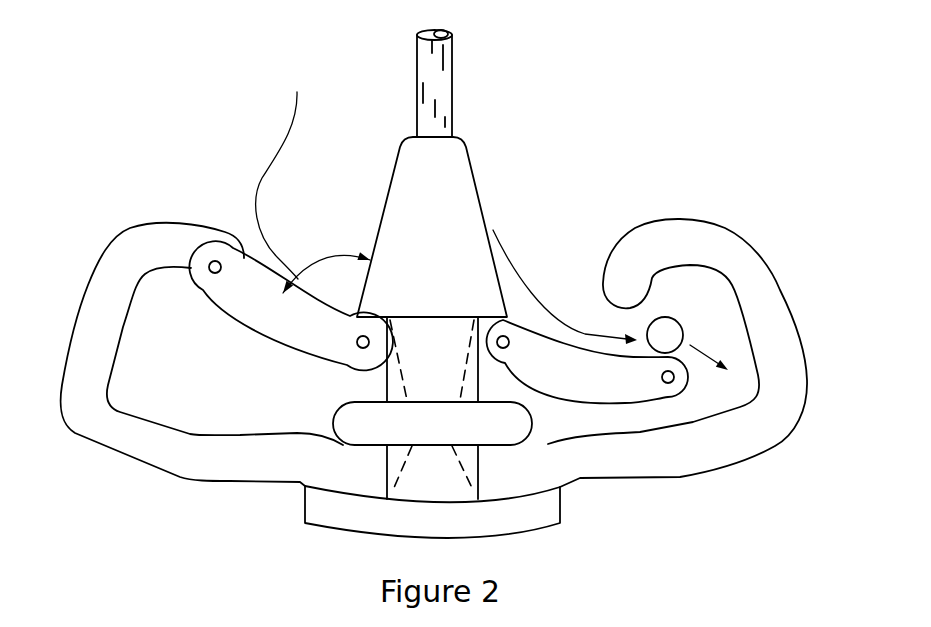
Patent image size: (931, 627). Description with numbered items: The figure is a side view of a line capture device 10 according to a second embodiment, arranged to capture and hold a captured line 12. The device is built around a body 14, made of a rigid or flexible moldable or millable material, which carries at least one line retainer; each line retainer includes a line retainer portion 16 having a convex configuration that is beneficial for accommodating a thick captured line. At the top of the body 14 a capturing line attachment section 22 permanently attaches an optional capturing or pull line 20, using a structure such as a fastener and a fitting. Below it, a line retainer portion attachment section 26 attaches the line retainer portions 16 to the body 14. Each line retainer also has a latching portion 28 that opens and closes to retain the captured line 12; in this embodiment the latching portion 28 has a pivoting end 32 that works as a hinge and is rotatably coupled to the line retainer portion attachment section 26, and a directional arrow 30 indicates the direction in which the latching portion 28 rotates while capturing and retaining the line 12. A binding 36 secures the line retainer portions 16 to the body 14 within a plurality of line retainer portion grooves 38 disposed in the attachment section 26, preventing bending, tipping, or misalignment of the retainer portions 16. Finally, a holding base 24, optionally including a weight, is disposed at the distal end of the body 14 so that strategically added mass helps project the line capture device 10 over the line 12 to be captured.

The line capture device 10 is at (210, 98).
The captured line 12 is at (667, 318).
The body 14 is at (367, 257).
The line retainer portion 16 is at (150, 452).
The capturing line 20 is at (445, 82).
The capturing line attachment section 22 is at (462, 175).
The holding base 24 is at (385, 522).
The line retainer portion attachment section 26 is at (437, 332).
The latching portion 28 is at (247, 306).
The directional arrow 30 is at (592, 424).
The pivoting end 32 is at (356, 343).
The binding 36 is at (432, 430).
The line retainer portion grooves 38 is at (398, 367).